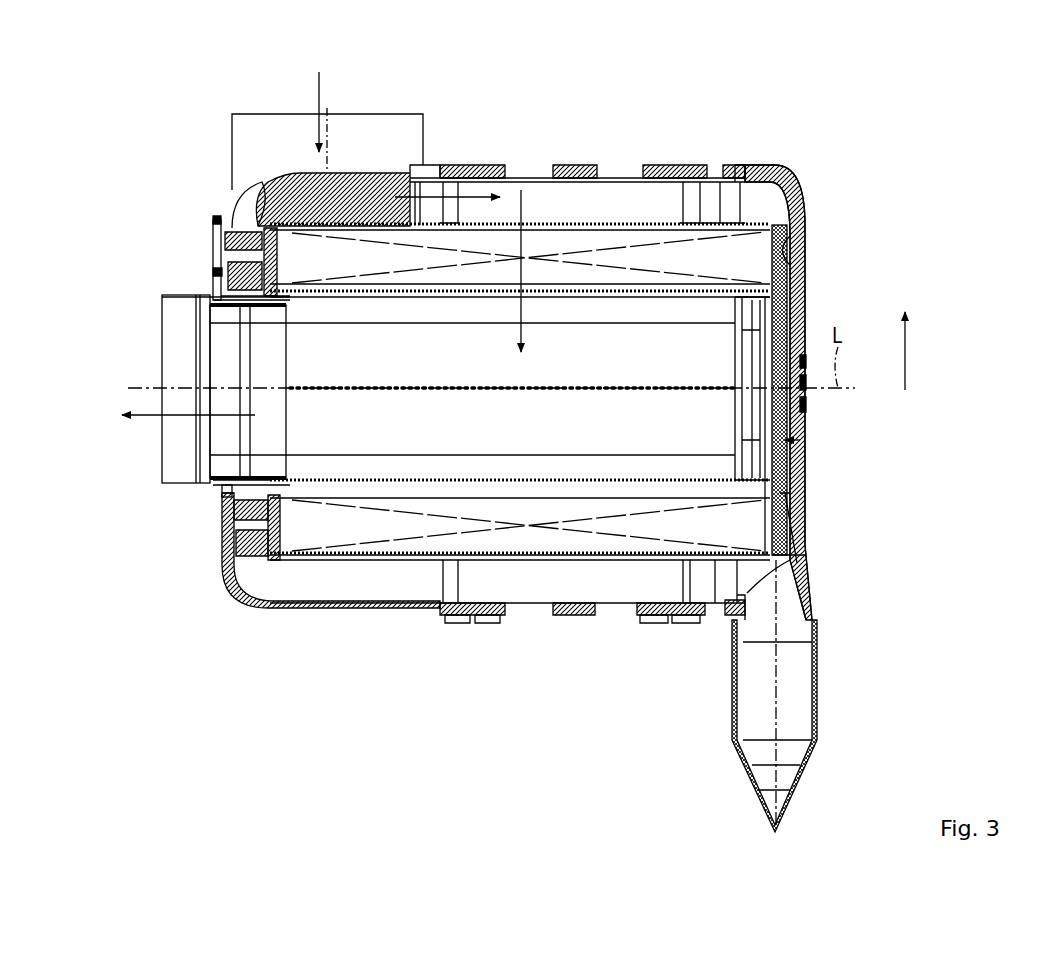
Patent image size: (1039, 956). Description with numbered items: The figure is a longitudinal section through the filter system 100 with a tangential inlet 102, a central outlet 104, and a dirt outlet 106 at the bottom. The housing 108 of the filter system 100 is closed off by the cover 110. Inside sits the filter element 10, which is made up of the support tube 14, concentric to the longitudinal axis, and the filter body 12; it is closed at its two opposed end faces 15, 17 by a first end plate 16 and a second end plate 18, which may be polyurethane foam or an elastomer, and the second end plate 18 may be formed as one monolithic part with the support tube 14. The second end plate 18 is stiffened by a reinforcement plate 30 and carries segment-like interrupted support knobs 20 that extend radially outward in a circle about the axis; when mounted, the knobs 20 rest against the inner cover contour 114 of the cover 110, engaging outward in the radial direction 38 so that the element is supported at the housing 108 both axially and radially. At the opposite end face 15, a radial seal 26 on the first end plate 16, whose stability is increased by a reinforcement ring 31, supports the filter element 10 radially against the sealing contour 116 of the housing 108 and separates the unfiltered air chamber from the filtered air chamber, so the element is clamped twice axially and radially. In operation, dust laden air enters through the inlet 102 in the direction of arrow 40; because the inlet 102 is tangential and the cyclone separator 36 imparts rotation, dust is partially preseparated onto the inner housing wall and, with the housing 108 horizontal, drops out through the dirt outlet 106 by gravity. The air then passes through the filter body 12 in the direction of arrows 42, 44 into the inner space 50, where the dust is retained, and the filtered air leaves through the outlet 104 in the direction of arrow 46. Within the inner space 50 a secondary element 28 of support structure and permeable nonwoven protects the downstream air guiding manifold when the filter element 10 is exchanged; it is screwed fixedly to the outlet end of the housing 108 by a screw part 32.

The filter system 100 is at (912, 168).
The cover 110 is at (783, 178).
The housing 108 is at (272, 612).
The cyclone separator 36 is at (284, 176).
The inlet 102 is at (358, 130).
The arrow 40 is at (312, 88).
The arrow 42 is at (465, 196).
The arrow 44 is at (525, 206).
The secondary element 28 is at (626, 478).
The support tube 14 is at (549, 497).
The inner space 50 is at (462, 440).
The second end plate 18 is at (807, 438).
The inner cover contour 114 is at (795, 238).
The support knobs 20 is at (806, 275).
The radial direction 38 is at (910, 353).
The reinforcement plate 30 is at (794, 508).
The end face 17 is at (792, 524).
The dirt outlet 106 is at (800, 686).
The outlet 104 is at (172, 345).
The screw part 32 is at (264, 478).
The arrow 46 is at (140, 420).
The reinforcement ring 31 is at (221, 249).
The first end plate 16 is at (219, 272).
The end face 15 is at (222, 502).
The radial seal 26 is at (222, 541).
The sealing contour 116 is at (270, 520).
The filter body 12 is at (421, 543).
The filter element 10 is at (500, 558).